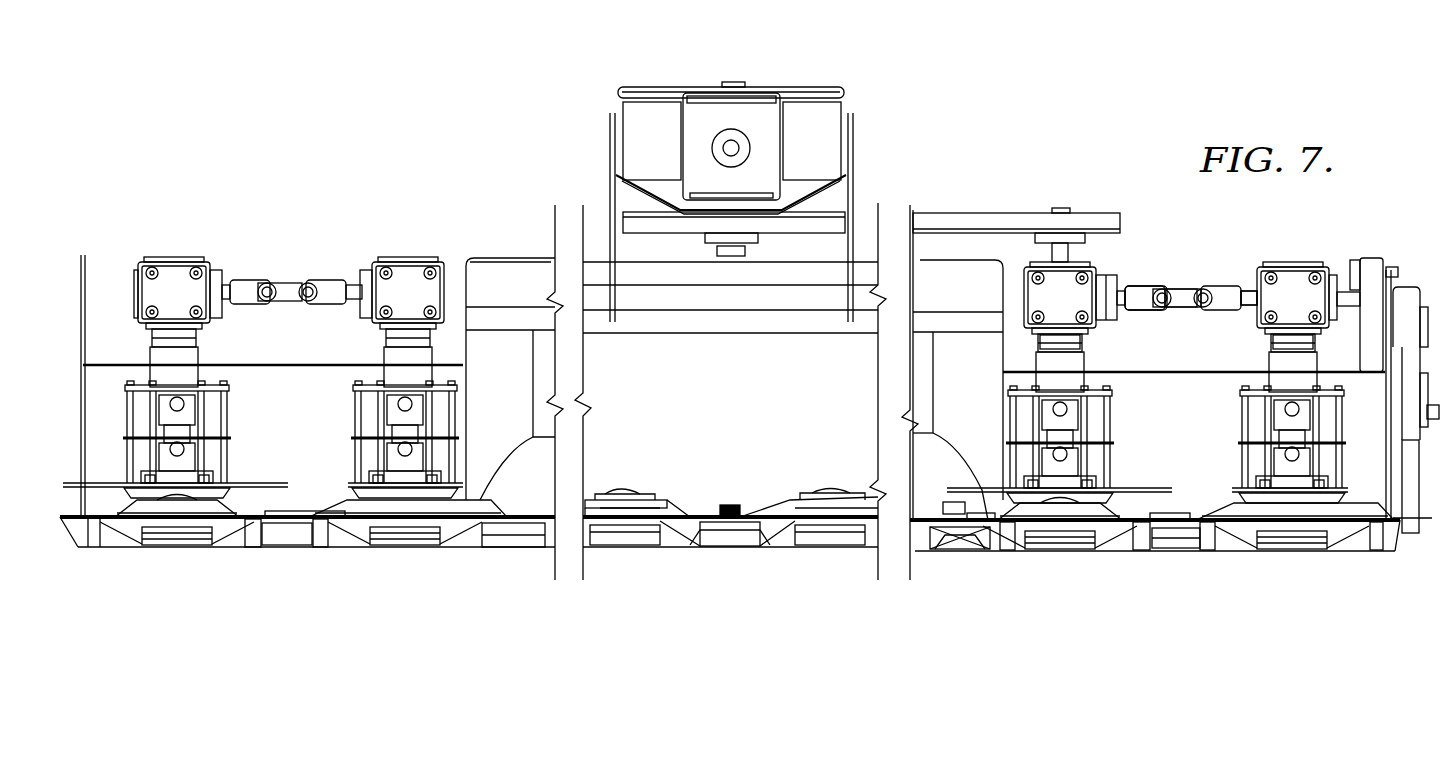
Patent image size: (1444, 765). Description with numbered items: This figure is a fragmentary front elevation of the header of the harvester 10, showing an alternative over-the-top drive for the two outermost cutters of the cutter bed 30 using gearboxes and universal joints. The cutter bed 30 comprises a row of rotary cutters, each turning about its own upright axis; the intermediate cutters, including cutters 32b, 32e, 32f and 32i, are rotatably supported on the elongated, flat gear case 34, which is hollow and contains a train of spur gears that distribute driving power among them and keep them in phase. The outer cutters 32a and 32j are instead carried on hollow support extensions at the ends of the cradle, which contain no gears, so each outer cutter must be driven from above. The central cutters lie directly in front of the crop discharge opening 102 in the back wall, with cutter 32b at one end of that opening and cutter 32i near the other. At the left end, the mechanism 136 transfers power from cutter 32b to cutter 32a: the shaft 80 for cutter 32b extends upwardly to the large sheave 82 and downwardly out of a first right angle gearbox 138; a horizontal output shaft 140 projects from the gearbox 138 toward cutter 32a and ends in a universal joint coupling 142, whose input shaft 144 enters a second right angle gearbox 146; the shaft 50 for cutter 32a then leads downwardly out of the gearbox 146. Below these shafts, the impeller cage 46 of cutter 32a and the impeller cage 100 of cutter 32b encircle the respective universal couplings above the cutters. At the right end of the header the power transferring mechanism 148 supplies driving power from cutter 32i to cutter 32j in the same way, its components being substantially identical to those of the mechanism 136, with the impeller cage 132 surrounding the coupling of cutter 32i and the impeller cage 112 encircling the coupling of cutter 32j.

The harvester 10 is at (912, 134).
The cutter bed 30 is at (1338, 570).
The rotary cutter 32a is at (1222, 507).
The rotary cutter 32b is at (1003, 547).
The rotary cutter 32e is at (770, 510).
The rotary cutter 32f is at (677, 510).
The rotary cutter 32i is at (418, 546).
The rotary cutter 32j is at (237, 545).
The gear case 34 is at (945, 560).
The impeller cage 46 is at (1232, 460).
The shaft 50 is at (1290, 344).
The shaft 80 is at (1057, 344).
The sheave 82 is at (1023, 213).
The impeller cage 100 is at (1122, 424).
The crop discharge opening 102 is at (730, 391).
The impeller cage 112 is at (236, 416).
The impeller cage 132 is at (352, 418).
The mechanism 136 is at (1168, 266).
The first right angle gearbox 138 is at (1037, 298).
The horizontal output shaft 140 is at (1127, 302).
The universal joint coupling 142 is at (1186, 290).
The input shaft 144 is at (1250, 290).
The second right angle gearbox 146 is at (1298, 278).
The power transferring mechanism 148 is at (272, 262).